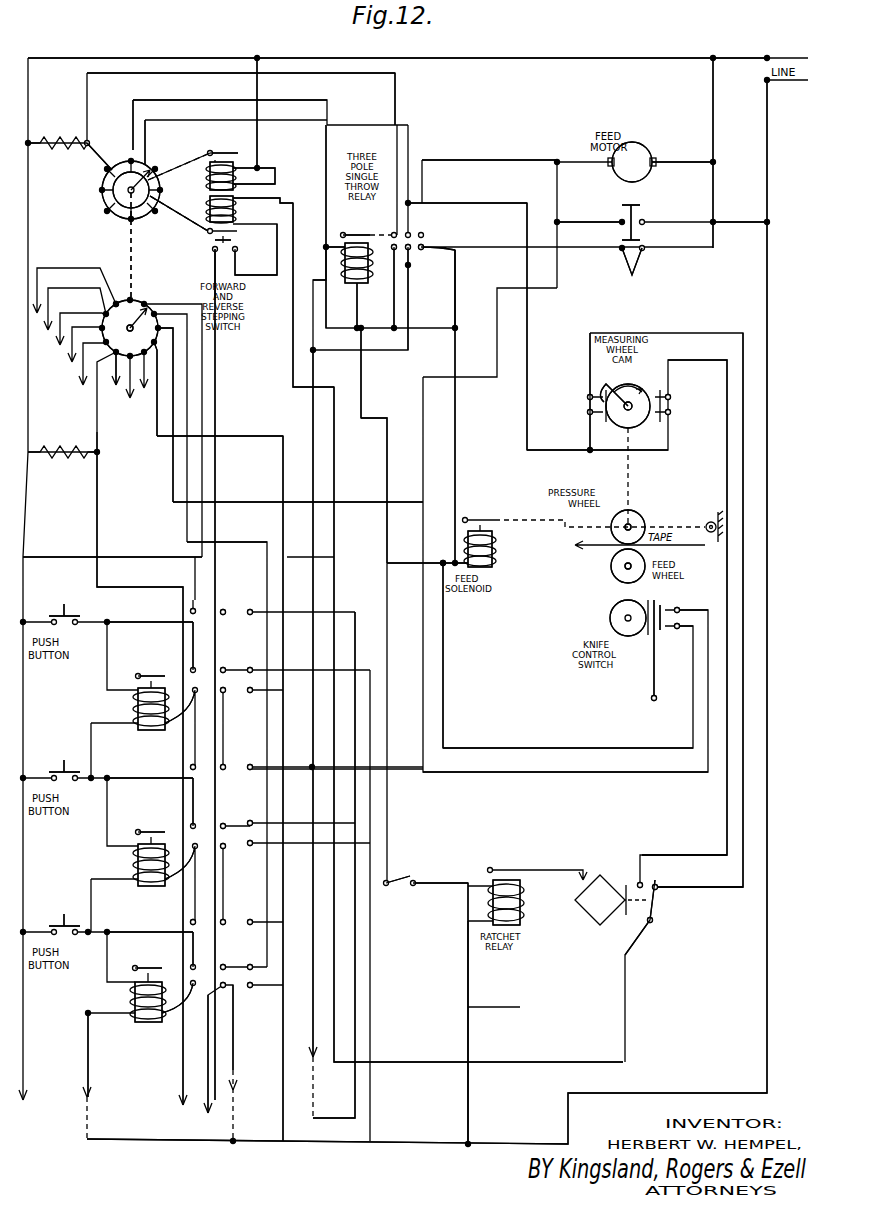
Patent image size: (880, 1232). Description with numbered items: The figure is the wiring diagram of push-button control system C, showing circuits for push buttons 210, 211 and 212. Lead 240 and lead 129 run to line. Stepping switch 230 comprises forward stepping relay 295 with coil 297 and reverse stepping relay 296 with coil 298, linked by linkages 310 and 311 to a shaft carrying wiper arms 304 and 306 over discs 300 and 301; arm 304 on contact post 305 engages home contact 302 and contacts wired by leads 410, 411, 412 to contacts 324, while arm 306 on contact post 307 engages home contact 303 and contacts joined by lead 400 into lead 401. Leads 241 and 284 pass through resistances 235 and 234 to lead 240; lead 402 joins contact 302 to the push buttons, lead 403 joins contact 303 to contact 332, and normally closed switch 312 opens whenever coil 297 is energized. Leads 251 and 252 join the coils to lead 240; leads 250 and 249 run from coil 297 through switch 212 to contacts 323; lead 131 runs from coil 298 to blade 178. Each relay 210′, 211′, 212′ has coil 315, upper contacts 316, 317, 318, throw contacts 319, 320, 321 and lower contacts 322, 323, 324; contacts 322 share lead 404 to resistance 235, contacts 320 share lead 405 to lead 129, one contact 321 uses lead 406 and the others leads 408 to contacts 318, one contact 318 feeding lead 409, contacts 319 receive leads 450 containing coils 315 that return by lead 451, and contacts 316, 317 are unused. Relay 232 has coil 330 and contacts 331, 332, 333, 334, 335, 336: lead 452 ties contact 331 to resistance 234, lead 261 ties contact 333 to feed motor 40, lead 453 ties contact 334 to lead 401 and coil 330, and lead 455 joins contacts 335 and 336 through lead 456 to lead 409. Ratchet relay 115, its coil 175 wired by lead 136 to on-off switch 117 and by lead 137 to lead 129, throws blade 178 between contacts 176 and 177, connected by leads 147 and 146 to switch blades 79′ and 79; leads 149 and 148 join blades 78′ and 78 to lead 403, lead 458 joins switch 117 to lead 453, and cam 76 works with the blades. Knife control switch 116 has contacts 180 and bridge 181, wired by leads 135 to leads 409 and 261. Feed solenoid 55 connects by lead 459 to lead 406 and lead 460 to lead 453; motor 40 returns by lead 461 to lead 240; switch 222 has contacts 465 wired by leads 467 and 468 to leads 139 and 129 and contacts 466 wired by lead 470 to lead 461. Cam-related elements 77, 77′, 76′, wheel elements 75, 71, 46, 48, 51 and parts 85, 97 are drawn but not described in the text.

The lead 240 is at (190, 58).
The electrical control system C is at (639, 42).
The lead 452 is at (87, 80).
The resistance 234 is at (65, 140).
The lead 284 is at (98, 150).
The lead 403 is at (203, 115).
The reverse stepping relay 296 is at (245, 141).
The lead 252 is at (262, 112).
The lead 401 is at (335, 110).
The lead 261 is at (481, 158).
The feed motor 40 is at (632, 140).
The lead 461 is at (678, 158).
The lead 470 is at (715, 172).
The lead 468 is at (748, 222).
The lead 129 is at (768, 262).
The wiper arm 306 is at (145, 163).
The index or home contact 303 is at (150, 165).
The broken line 311 is at (190, 155).
The coil 298 is at (262, 168).
The lead 251 is at (278, 182).
The forward stepping relay 295 is at (278, 203).
The disc 301 is at (101, 181).
The contact post 307 is at (105, 195).
The stepping switch 230 is at (97, 224).
The coil 297 is at (236, 226).
The lead 250 is at (236, 240).
The switch 312 is at (236, 250).
The lead 131 is at (302, 250).
The lead 400 is at (140, 222).
The broken line 310 is at (213, 240).
The index or home contact 302 is at (135, 282).
The contact post 305 is at (114, 304).
The wiper arm 304 is at (130, 336).
The disc 300 is at (120, 380).
The lead 241 is at (97, 432).
The resistance 235 is at (70, 460).
The lead 404 is at (97, 505).
The lead 412 is at (165, 438).
The lead 249 is at (215, 398).
The lead 411 is at (265, 502).
The lead 410 is at (260, 542).
The lead 402 is at (160, 557).
The lead 409 is at (313, 370).
The lead 456 is at (410, 350).
The lead 460 is at (455, 348).
The lead 458 is at (385, 416).
The lead 139 is at (418, 432).
The lead 406 is at (385, 556).
The lead 149 is at (487, 203).
The contacts 465 is at (620, 220).
The continuous operation switch 222 is at (651, 201).
The lead 467 is at (568, 225).
The contacts 466 is at (632, 272).
The lead 146 is at (710, 315).
The throw contact 331 is at (394, 230).
The throw contact 332 is at (405, 232).
The throw contact 333 is at (421, 236).
The stationary contact 336 is at (352, 258).
The lead 455 is at (356, 265).
The stationary contact 335 is at (408, 255).
The stationary contact 334 is at (394, 255).
The coil 330 is at (366, 283).
The lead 453 is at (326, 247).
The three-pole single throw relay 232 is at (338, 221).
The cam lobe 77′ is at (603, 383).
The cam 77 is at (600, 385).
The switch blade 79 is at (588, 395).
The switch blade 78 is at (588, 415).
The lead 148 is at (588, 436).
The cam 76 is at (645, 395).
The cam shaft 76′ is at (622, 428).
The switch blade 79′ is at (670, 395).
The switch blade 78′ is at (670, 414).
The lead 147 is at (690, 360).
The pressure wheel 75 is at (640, 515).
The pressure wheel axle 71 is at (645, 525).
The lead 459 is at (460, 560).
The feed solenoid 55 is at (495, 554).
The feed wheel 46 is at (622, 570).
The feed wheel shaft 48 is at (615, 578).
The knife control wheel 51 is at (612, 606).
The bridge 181 is at (676, 609).
The contacts 180 is at (679, 610).
The switch arm 85 is at (660, 630).
The tape cut-off knife control switch 116 is at (675, 644).
The switch contact 97 is at (650, 690).
The lead 135 is at (497, 775).
The lead 136 is at (462, 880).
The stationary contact 176 is at (638, 882).
The stationary contact 177 is at (658, 888).
The movable contact blade 178 is at (652, 915).
The double throw single-pole ratchet relay 115 is at (666, 920).
The coil 175 is at (490, 900).
The lead 137 is at (468, 1007).
The push button 210 is at (70, 600).
The upper stationary contact 316 is at (195, 605).
The upper stationary contact 317 is at (240, 605).
The lead 450 is at (165, 622).
The upper stationary contact 318 is at (250, 620).
The throw contact 321 is at (255, 662).
The throw contact 320 is at (230, 668).
The throw contact 319 is at (190, 665).
The coil 315 is at (135, 705).
The push button 211 is at (70, 756).
The lower stationary contact 323 is at (224, 693).
The lower stationary contact 324 is at (250, 693).
The lead 408 is at (310, 765).
The double throw three-pole relay 210′ is at (146, 731).
The lower stationary contact 322 is at (192, 728).
The push button 212 is at (70, 910).
The double throw three-pole relay 211′ is at (143, 893).
The double throw three-pole relay 212′ is at (145, 1042).
The manual on and off switch 117 is at (400, 890).
The lead 451 is at (87, 1076).
The lead 405 is at (233, 1060).